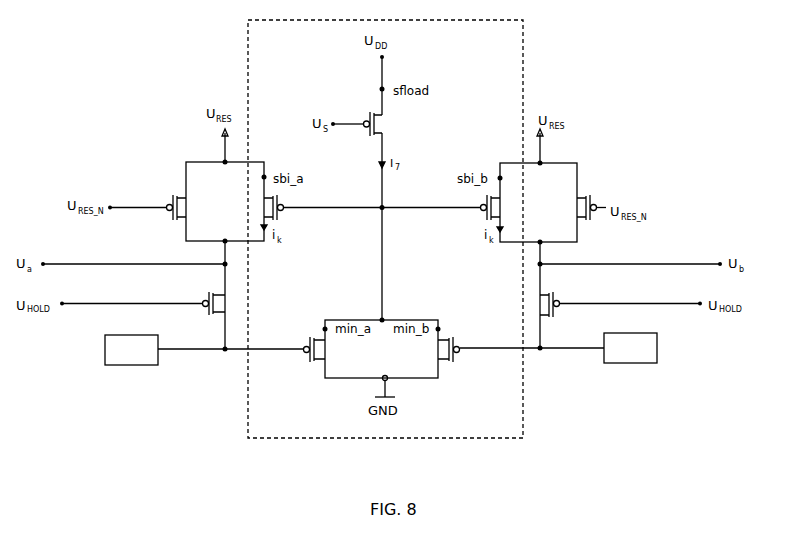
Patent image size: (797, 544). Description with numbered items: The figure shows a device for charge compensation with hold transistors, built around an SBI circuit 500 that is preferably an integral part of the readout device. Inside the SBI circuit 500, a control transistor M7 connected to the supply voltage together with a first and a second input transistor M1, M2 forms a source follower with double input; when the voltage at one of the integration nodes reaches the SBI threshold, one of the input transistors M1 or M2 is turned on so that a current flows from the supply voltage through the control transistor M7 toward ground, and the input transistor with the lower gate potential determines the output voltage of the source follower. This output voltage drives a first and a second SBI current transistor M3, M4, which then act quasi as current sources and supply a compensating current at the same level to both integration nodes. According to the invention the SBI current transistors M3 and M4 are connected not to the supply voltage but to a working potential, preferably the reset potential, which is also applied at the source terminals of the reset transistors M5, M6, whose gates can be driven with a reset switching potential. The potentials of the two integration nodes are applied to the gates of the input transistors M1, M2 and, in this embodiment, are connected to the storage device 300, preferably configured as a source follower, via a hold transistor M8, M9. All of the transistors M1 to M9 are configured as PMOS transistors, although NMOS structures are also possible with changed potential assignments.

The SBI circuit 500 is at (526, 56).
The memory device 300 is at (381, 349).
The first input transistor M1 is at (325, 349).
The second input transistor M2 is at (440, 349).
The first SBI current transistor M3 is at (364, 207).
The second SBI current transistor M4 is at (501, 207).
The reset transistor M5 is at (157, 207).
The reset transistor M6 is at (583, 207).
The control transistor M7 is at (371, 124).
The hold transistor M8 is at (620, 299).
The hold transistor M9 is at (143, 297).